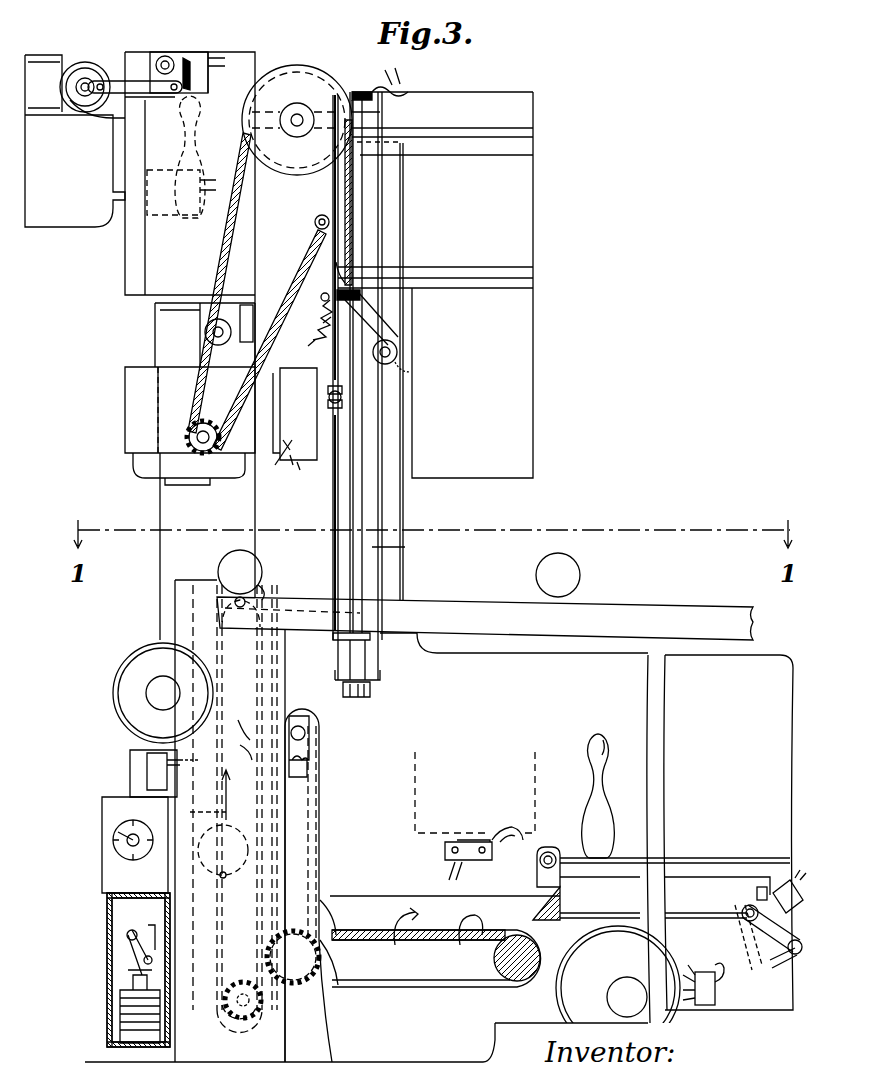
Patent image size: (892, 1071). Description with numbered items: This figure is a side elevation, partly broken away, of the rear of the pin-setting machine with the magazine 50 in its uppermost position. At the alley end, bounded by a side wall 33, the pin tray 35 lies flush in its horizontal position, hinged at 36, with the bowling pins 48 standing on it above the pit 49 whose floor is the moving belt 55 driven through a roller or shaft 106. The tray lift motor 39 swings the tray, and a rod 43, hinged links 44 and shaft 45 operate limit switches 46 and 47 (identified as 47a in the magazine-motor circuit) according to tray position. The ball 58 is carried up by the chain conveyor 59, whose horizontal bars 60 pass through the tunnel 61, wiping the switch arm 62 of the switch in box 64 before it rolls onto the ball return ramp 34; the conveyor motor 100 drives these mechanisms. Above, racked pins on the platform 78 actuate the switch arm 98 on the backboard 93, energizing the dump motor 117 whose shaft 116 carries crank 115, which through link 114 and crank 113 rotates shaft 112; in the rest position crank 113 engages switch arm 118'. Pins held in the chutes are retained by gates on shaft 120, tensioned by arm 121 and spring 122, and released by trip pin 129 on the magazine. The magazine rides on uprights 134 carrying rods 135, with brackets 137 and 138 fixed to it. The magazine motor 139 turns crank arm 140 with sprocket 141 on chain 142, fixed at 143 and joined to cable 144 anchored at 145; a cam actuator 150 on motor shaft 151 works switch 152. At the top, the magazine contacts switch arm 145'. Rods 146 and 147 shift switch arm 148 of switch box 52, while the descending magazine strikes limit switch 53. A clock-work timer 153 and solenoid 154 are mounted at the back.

The crank 115 is at (88, 78).
The link 114 is at (132, 82).
The shaft 112 is at (163, 56).
The crank 113 is at (180, 82).
The switch arm 118' is at (228, 58).
The cable end securing point 145 is at (297, 108).
The switch arm 145' is at (402, 87).
The upper angle iron bracket 137 is at (490, 148).
The lower angle iron bracket 138 is at (475, 264).
The shaft of dump motor 116 is at (78, 102).
The dump motor 117 is at (62, 180).
The pin rack platform 78 is at (165, 220).
The switch arm 98 is at (190, 174).
The backboard 93 is at (125, 278).
The cable 144 is at (235, 210).
The chain fixed end 143 is at (315, 222).
The chain section 142 is at (300, 266).
The cam-like switch actuator 150 is at (238, 304).
The button-actuated switch 152 is at (262, 300).
The spring 122 is at (345, 275).
The arm 121 is at (345, 315).
The shaft 120 is at (392, 343).
The shaft of magazine motor 151 is at (205, 327).
The upper switch-actuating rod 146 is at (333, 355).
The magazine 50 is at (520, 349).
The trip pin 129 is at (408, 375).
The crank arm 140 is at (208, 382).
The switch arm 148 is at (322, 395).
The magazine motor 139 is at (125, 412).
The sprocket 141 is at (188, 445).
The switch box 52 is at (277, 469).
The lower switch-actuating rod 147 is at (333, 511).
The vertical rod 135 is at (355, 515).
The upright 134 is at (385, 547).
The ball 58 is at (225, 565).
The ball return ramp 34 is at (672, 612).
The side wall 33 is at (770, 668).
The conveyor motor 100 is at (118, 680).
The tunnel 61 is at (205, 718).
The switch box 64 is at (147, 776).
The ball elevator chain conveyor 59 is at (235, 809).
The switch arm 62 is at (219, 797).
The clock-work timer 153 is at (100, 862).
The horizontal bar 60 is at (226, 878).
The solenoid 154 is at (128, 1020).
The roller or shaft 106 is at (300, 980).
The pit 49 is at (445, 937).
The moving belt 55 is at (494, 948).
The tray lift motor 39 is at (575, 988).
The limit switch 53 is at (445, 852).
The hinge 36 is at (540, 862).
The bowling pin 48 is at (595, 788).
The pin tray 35 is at (615, 890).
The limit switch 46 is at (757, 897).
The hinged link 44 is at (752, 940).
The rod 43 is at (775, 960).
The limit switch 47 is at (715, 992).
The shaft 45 is at (790, 958).
The limit switch 47a is at (715, 1005).